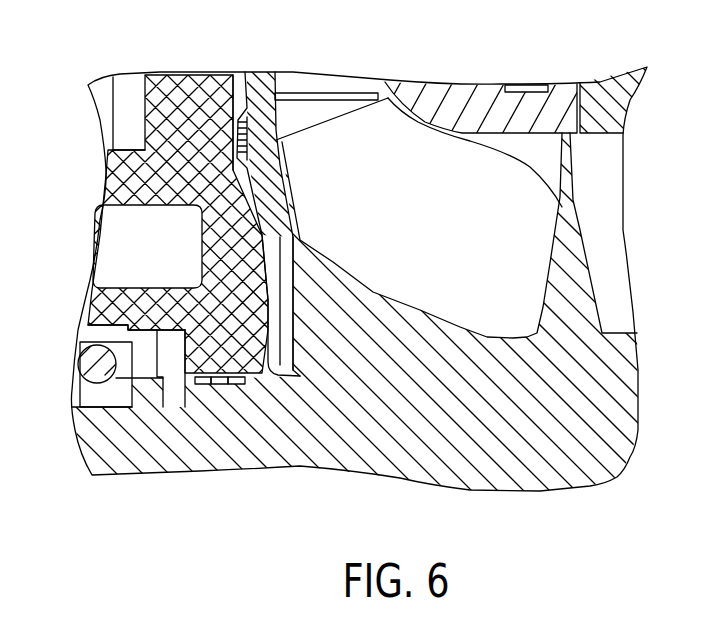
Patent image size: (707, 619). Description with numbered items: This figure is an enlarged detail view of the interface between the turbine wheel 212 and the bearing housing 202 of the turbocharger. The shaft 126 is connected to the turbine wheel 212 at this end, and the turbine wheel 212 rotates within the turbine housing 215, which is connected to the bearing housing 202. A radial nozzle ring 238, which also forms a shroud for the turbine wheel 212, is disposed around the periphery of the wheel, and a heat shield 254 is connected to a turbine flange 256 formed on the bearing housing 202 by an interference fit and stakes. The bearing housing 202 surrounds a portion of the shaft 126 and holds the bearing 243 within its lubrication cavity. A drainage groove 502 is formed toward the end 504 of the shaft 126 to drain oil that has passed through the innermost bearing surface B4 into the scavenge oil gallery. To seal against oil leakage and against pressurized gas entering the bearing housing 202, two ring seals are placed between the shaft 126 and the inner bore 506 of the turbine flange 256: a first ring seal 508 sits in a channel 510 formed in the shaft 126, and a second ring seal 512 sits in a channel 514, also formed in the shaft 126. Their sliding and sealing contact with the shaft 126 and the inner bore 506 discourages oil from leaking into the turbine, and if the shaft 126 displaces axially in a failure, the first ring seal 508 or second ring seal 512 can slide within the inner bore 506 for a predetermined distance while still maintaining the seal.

The shaft 126 is at (93, 438).
The bearing housing 202 is at (110, 181).
The turbine wheel 212 is at (620, 394).
The turbine housing 215 is at (623, 118).
The radial nozzle ring 238 is at (562, 87).
The bearing 243 is at (80, 365).
The heat shield 254 is at (260, 93).
The turbine flange 256 is at (195, 90).
The drainage groove 502 is at (160, 327).
The end of the shaft 504 is at (165, 410).
The inner bore 506 is at (300, 237).
The first ring seal 508 is at (195, 393).
The channel 510 is at (210, 393).
The second ring seal 512 is at (240, 397).
The channel 514 is at (240, 393).
The innermost bearing surface B4 is at (92, 308).